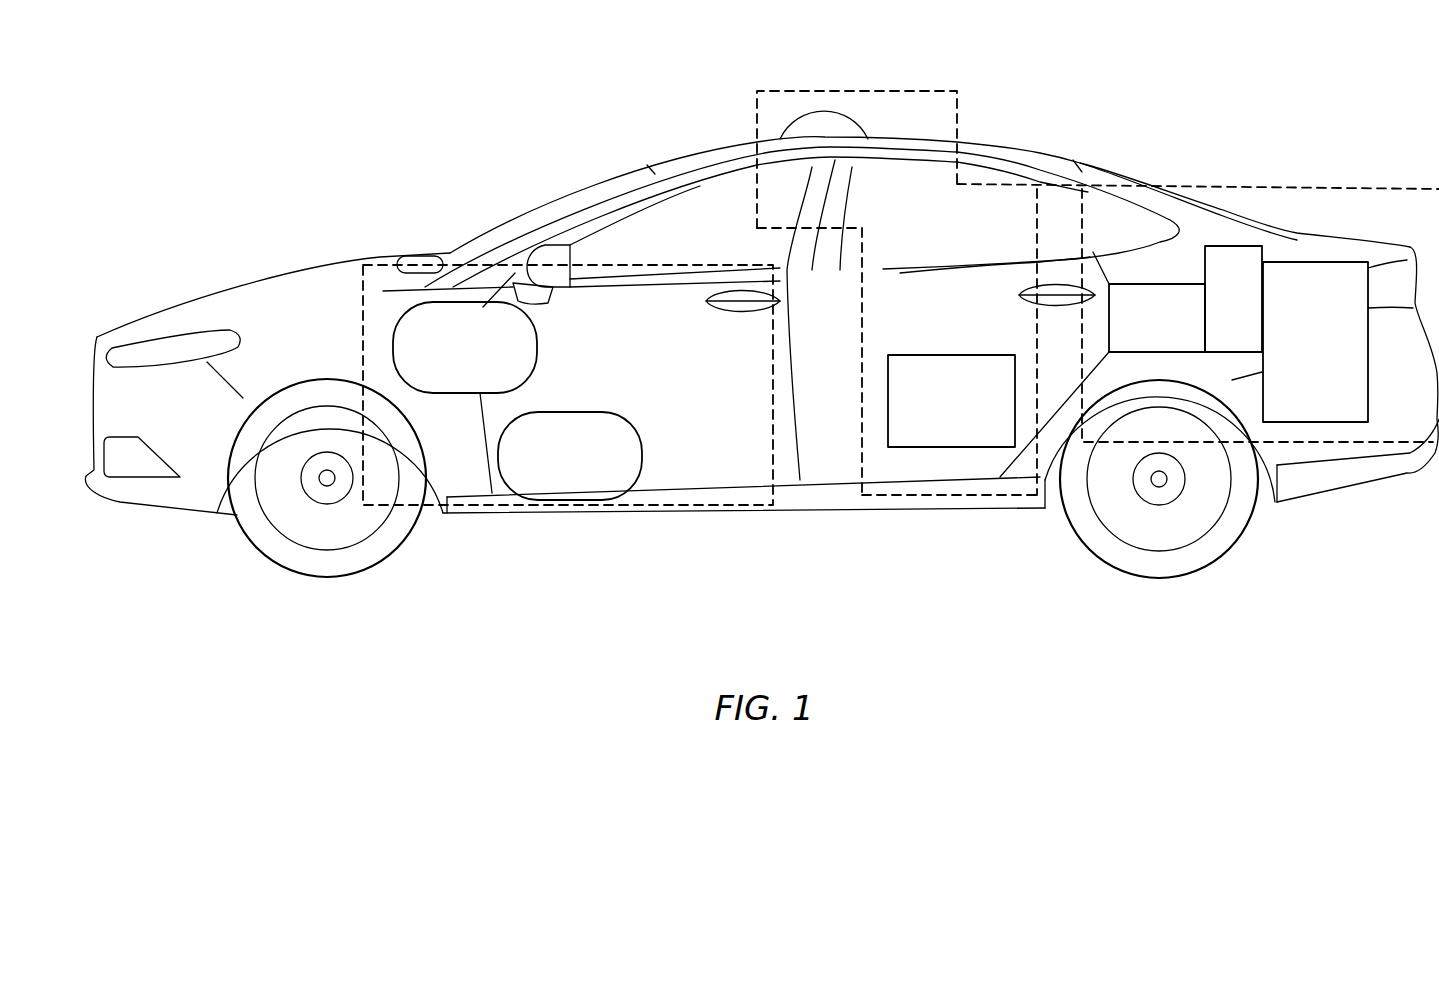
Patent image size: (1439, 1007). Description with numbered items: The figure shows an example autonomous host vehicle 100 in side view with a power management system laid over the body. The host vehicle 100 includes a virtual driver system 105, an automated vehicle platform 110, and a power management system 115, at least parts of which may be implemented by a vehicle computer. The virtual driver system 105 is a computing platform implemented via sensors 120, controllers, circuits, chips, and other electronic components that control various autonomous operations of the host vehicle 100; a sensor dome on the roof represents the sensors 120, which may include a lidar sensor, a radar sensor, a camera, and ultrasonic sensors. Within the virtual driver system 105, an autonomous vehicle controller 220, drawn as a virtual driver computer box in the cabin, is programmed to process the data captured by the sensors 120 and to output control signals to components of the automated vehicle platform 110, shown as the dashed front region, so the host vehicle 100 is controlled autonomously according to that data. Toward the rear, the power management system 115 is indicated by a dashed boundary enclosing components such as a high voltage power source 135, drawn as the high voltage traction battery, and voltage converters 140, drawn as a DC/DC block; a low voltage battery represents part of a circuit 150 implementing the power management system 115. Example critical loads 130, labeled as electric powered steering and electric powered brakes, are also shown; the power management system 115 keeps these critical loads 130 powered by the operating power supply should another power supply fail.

The autonomous host vehicle 100 is at (1043, 133).
The virtual driver system 105 is at (887, 500).
The automated vehicle platform 110 is at (356, 318).
The power management system 115 is at (1358, 184).
The sensors 120 is at (802, 122).
The critical loads 130 is at (546, 361).
The high voltage power source 135 is at (1346, 261).
The voltage converters 140 is at (1247, 245).
The circuit 150 is at (1133, 283).
The autonomous vehicle controller 220 is at (922, 354).